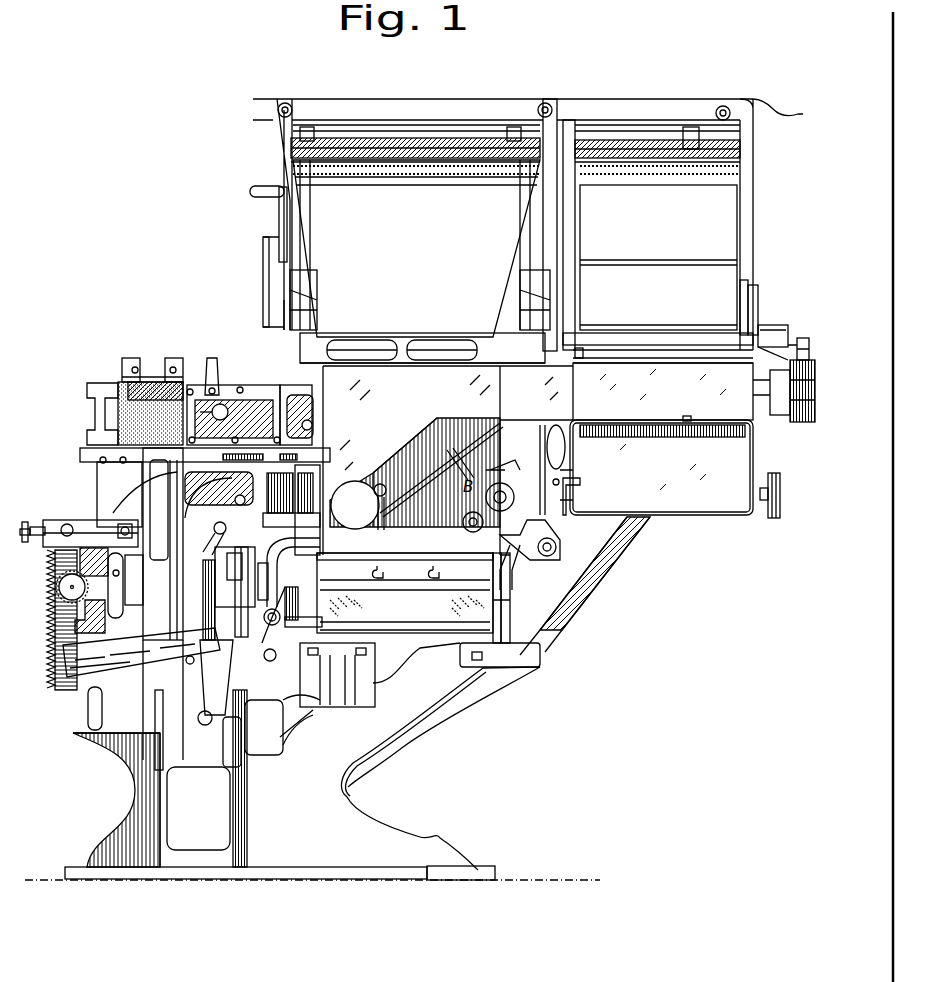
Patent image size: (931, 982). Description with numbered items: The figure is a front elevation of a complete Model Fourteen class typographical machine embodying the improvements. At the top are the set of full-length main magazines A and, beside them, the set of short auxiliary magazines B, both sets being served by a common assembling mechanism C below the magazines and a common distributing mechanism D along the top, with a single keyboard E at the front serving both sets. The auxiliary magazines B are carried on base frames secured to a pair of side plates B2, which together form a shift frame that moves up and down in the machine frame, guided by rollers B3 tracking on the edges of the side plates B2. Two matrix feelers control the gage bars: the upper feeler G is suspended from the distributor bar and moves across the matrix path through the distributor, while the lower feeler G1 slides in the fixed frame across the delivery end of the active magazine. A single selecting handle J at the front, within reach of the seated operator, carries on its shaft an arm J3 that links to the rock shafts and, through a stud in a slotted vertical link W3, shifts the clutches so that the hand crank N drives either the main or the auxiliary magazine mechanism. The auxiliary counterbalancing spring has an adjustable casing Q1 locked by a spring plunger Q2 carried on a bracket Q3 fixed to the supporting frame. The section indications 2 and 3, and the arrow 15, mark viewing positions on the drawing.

The main magazines A is at (420, 248).
The auxiliary magazines B is at (658, 274).
The side plates B2 is at (749, 300).
The rollers B3 is at (745, 283).
The assembling mechanism C is at (448, 460).
The distributing mechanism D is at (403, 140).
The keyboard E is at (405, 593).
The matrix feeler G is at (484, 158).
The matrix feeler G1 is at (366, 340).
The selecting handle J is at (492, 456).
The arm J3 is at (553, 430).
The hand crank N is at (515, 570).
The adjustable casing Q1 is at (803, 420).
The spring plunger Q2 is at (805, 340).
The bracket Q3 is at (768, 325).
The vertical link W3 is at (557, 507).
The support arm 15 is at (572, 566).
The section line 2- 2 is at (510, 73).
The section line 3- 3 is at (685, 73).